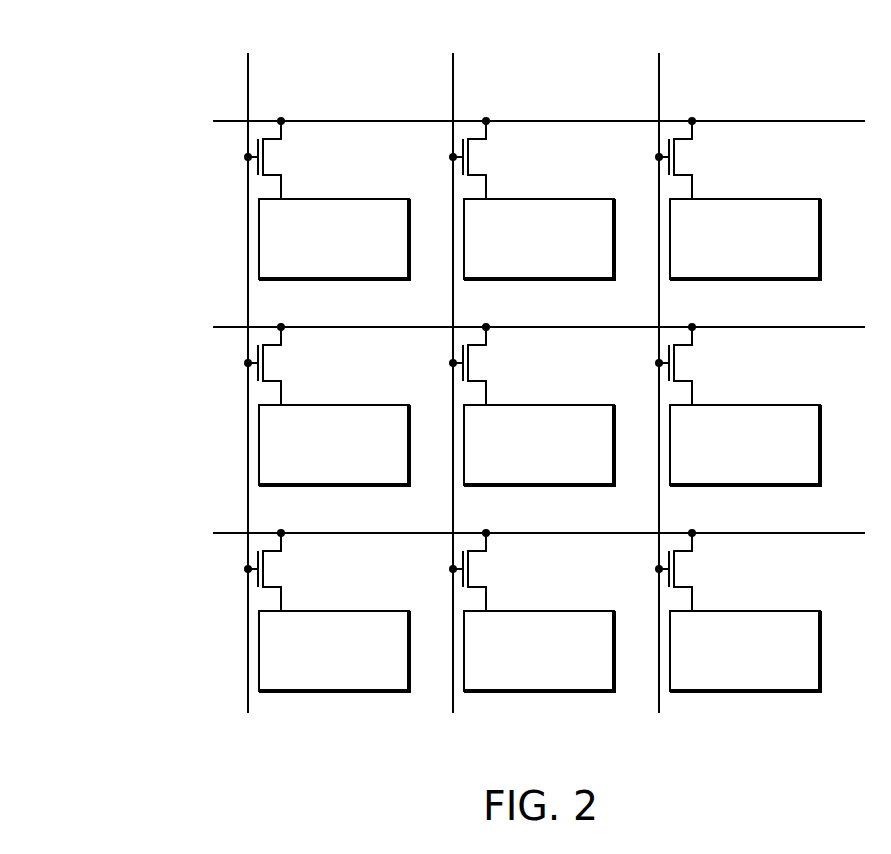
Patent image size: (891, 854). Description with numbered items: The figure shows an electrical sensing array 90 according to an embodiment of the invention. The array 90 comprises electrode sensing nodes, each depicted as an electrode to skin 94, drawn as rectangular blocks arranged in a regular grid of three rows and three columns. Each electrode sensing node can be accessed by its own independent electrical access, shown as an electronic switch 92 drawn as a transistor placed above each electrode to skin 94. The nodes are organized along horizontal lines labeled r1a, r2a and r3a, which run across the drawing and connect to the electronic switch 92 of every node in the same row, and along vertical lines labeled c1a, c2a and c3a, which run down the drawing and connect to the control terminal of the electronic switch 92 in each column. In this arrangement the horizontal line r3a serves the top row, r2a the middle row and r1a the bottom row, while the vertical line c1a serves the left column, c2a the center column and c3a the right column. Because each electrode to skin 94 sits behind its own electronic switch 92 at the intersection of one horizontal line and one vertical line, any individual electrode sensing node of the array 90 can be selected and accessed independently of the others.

The electrical sensing array 90 is at (146, 242).
The electronic switch 92 is at (708, 142).
The electrode to skin 94 is at (797, 255).
The row line 1 r1a is at (218, 534).
The row line 2 r2a is at (218, 328).
The row line 3 r3a is at (218, 122).
The column line 1 c1a is at (248, 713).
The column line 2 c2a is at (453, 713).
The column line 3 c3a is at (659, 713).